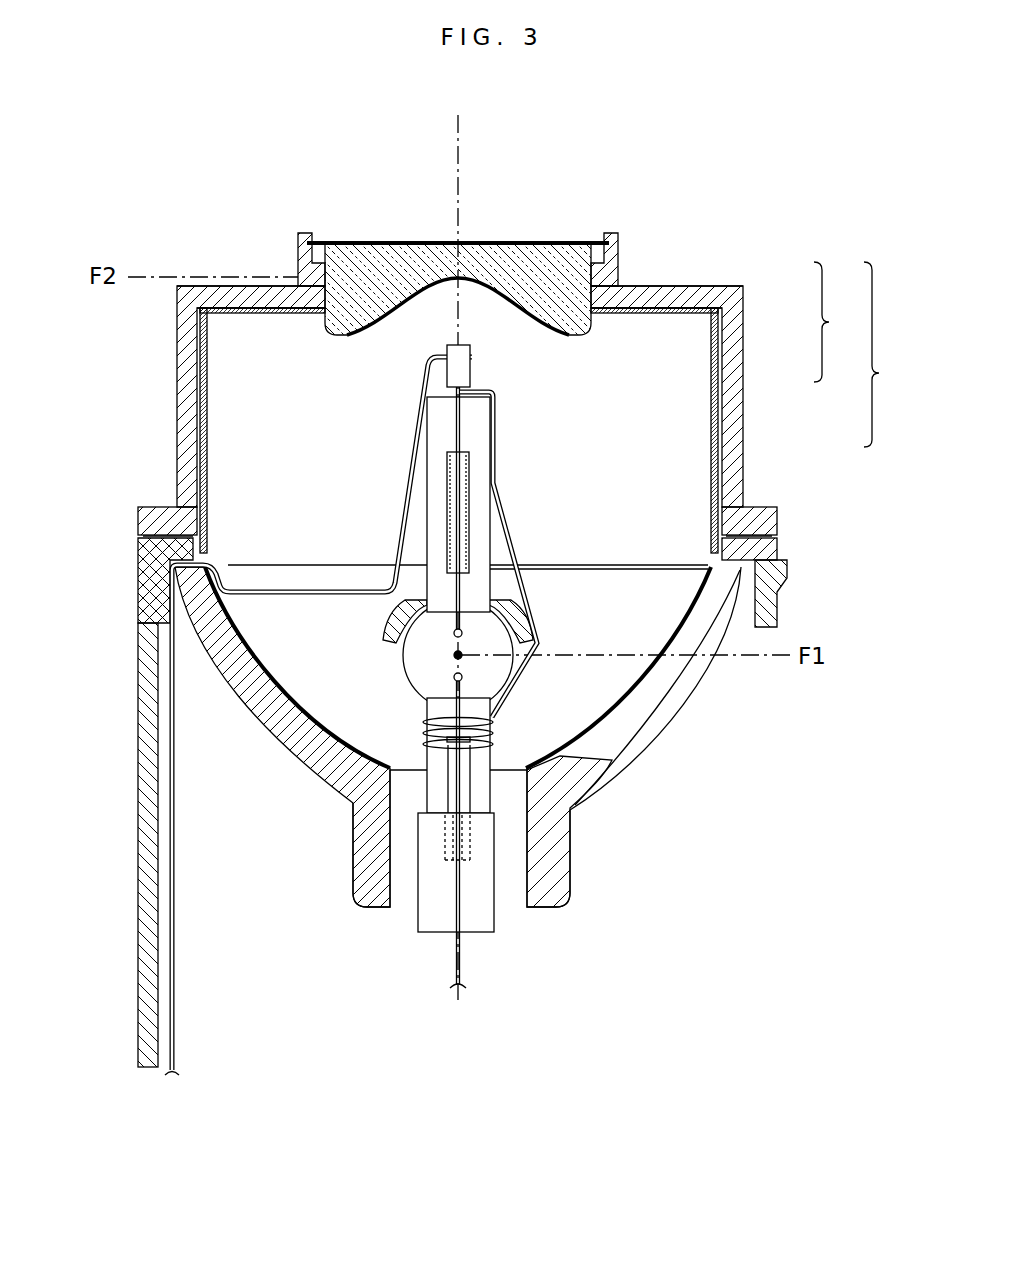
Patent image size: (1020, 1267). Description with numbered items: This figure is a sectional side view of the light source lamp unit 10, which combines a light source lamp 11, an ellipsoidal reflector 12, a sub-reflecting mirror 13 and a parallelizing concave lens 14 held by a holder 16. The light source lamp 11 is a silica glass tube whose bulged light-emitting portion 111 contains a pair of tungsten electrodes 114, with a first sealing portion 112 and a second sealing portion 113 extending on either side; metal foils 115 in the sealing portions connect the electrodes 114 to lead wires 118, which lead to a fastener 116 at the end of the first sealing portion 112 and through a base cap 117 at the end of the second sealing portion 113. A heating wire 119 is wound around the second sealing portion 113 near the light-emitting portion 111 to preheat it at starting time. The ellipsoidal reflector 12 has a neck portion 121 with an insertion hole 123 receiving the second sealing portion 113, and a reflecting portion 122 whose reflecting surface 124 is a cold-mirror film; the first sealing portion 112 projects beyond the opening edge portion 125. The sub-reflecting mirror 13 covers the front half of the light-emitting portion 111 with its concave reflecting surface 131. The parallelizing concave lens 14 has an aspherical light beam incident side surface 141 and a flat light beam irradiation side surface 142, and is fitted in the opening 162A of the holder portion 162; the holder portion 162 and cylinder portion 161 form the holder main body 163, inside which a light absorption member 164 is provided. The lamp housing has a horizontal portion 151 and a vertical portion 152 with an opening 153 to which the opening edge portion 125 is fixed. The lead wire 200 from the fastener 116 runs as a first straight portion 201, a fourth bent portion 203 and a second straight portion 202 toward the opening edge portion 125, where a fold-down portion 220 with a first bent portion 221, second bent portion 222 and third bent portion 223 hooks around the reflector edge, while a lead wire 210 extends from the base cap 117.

The light source lamp unit 10 is at (782, 142).
The light source lamp 11 is at (527, 628).
The ellipsoidal reflector 12 is at (458, 708).
The sub-reflecting mirror 13 is at (518, 597).
The parallelizing concave lens 14 is at (458, 283).
The holder 16 is at (542, 407).
The light-emitting portion 111 is at (518, 680).
The first sealing portion 112 is at (480, 492).
The second sealing portion 113 is at (492, 760).
The tungsten electrodes 114 is at (452, 676).
The metal foils 115 is at (468, 467).
The fastener 116 is at (455, 345).
The base cap 117 is at (497, 932).
The lead wire 118 is at (462, 412).
The heating wire 119 is at (517, 560).
The neck portion 121 is at (365, 880).
The reflecting portion 122 is at (275, 735).
The insertion hole 123 is at (383, 838).
The reflecting surface 124 is at (600, 715).
The opening edge portion 125 is at (316, 572).
The reflecting surface 131 is at (523, 642).
The light beam incident side surface 141 is at (547, 322).
The light beam irradiation side surface 142 is at (445, 243).
The horizontal portion 151 is at (145, 890).
The vertical portion 152 is at (148, 558).
The opening 153 is at (738, 556).
The cylinder portion 161 is at (747, 363).
The holder portion 162 is at (723, 288).
The opening 162A is at (627, 290).
The holder main body 163 is at (841, 322).
The light absorption member 164 is at (722, 443).
The lead wire 200 is at (318, 716).
The first straight portion 201 is at (413, 432).
The second straight portion 202 is at (338, 596).
The fourth bent portion 203 is at (392, 585).
The lead wire 210 is at (465, 975).
The fold-down portion 220 is at (192, 578).
The first bent portion 221 is at (232, 578).
The second bent portion 222 is at (220, 562).
The third bent portion 223 is at (148, 585).